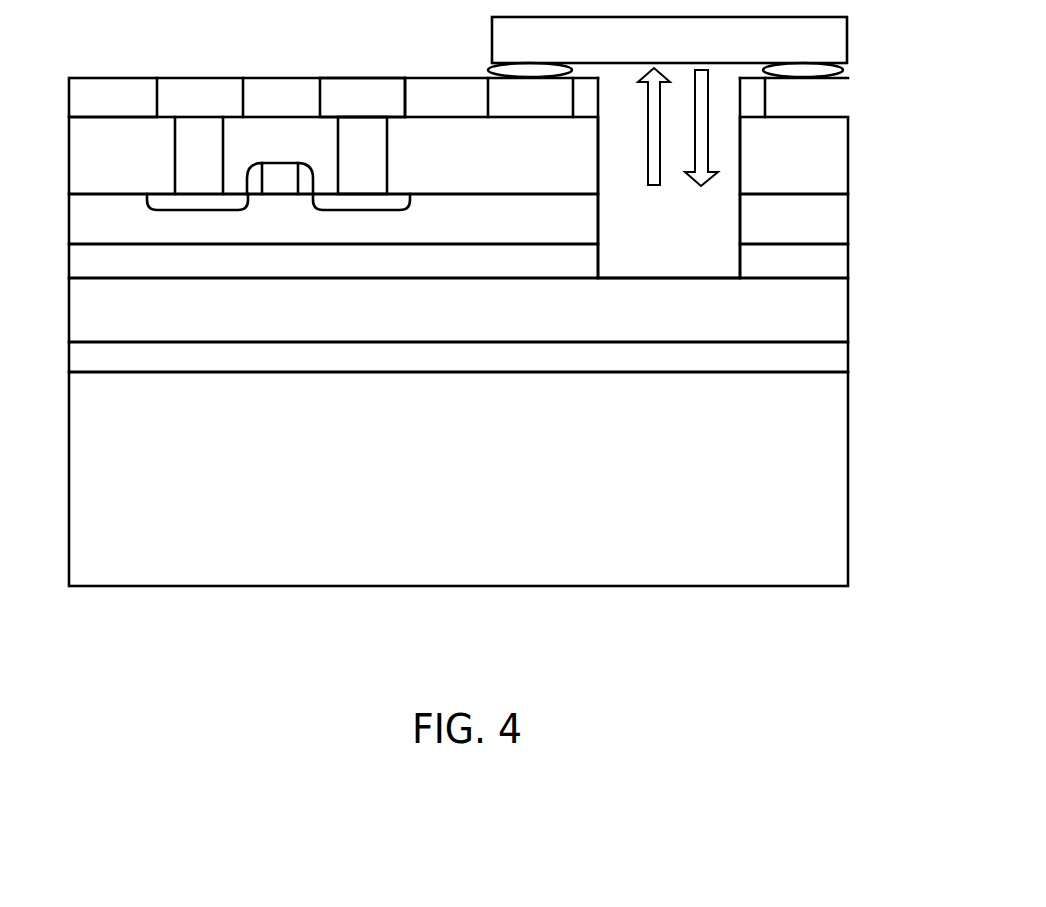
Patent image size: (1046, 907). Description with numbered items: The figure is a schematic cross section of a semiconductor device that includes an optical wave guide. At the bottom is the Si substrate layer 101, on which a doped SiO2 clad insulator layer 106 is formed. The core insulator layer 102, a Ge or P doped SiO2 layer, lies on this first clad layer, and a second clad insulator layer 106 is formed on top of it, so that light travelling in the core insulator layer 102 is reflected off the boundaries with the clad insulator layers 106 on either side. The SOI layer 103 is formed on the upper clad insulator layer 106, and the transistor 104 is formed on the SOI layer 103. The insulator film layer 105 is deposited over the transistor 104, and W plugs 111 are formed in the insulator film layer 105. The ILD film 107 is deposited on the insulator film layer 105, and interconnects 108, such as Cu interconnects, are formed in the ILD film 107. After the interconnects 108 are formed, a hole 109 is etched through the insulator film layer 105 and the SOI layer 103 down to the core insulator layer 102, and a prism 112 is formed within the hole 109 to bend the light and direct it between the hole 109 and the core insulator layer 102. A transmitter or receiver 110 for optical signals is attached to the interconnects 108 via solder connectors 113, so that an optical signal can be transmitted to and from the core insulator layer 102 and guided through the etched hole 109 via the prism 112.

The Si substrate layer 101 is at (458, 479).
The core insulator layer 102 is at (458, 310).
The SOI layer 103 is at (458, 219).
The transistor 104 is at (278, 198).
The insulator film layer 105 is at (458, 155).
The clad insulator layer 106 is at (458, 310).
The ILD film 107 is at (458, 97).
The interconnects 108 is at (362, 97).
The hole 109 is at (669, 173).
The transmitter or receiver 110 is at (669, 40).
The W plugs 111 is at (362, 155).
The prism 112 is at (598, 244).
The solder connectors 113 is at (847, 70).